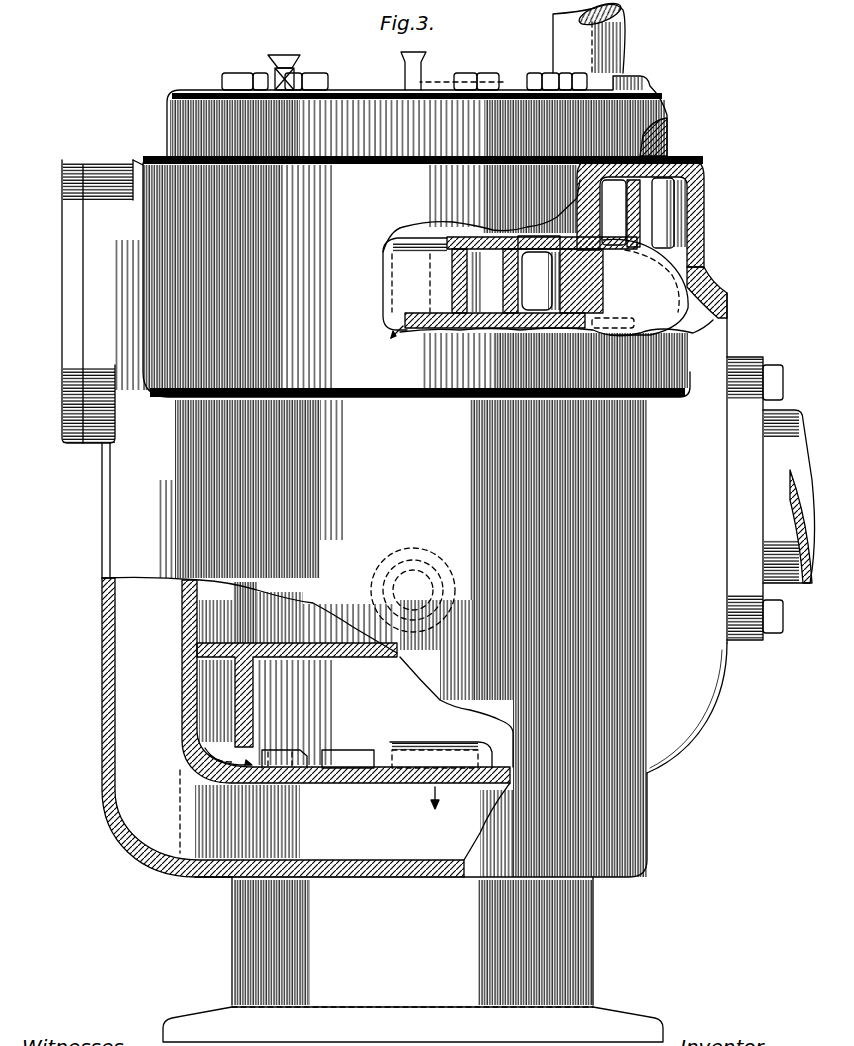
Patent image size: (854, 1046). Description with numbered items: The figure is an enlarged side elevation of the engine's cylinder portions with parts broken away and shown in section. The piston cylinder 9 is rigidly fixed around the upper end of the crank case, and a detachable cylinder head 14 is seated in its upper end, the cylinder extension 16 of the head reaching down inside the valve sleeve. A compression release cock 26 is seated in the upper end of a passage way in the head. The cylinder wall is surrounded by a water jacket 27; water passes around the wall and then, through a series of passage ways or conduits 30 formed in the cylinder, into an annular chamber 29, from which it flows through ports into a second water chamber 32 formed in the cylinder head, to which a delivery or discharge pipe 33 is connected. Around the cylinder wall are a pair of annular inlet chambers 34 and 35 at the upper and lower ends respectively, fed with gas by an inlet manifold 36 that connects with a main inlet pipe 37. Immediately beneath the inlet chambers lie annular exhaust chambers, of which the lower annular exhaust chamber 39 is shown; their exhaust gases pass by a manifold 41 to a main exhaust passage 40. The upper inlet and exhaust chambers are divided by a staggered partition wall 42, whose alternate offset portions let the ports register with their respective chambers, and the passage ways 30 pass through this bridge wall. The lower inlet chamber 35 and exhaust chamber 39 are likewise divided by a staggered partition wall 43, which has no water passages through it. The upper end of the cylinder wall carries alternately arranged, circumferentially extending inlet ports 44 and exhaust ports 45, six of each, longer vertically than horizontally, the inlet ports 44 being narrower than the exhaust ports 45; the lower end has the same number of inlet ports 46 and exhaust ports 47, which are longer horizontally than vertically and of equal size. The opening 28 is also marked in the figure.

The piston cylinder 9 is at (600, 1008).
The cylinder head 14 is at (661, 106).
The cylinder extension 16 is at (540, 84).
The compression release cock 26 is at (300, 63).
The water jacket 27 is at (183, 612).
The opening 28 is at (418, 572).
The annular chamber 29 is at (634, 193).
The passage ways or conduits 30 is at (481, 316).
The second water chamber 32 is at (667, 136).
The delivery or discharge pipe 33 is at (622, 47).
The upper annular inlet chamber 34 is at (692, 203).
The lower annular inlet chamber 35 is at (316, 724).
The inlet manifold 36 is at (687, 687).
The main inlet pipe 37 is at (780, 575).
The lower annular exhaust chamber 39 is at (198, 872).
The main exhaust passage 40 is at (70, 340).
The exhaust manifold 41 is at (125, 650).
The staggered partition wall 42 is at (497, 230).
The lower staggered partition wall 43 is at (350, 783).
The upper inlet ports 44 is at (554, 243).
The upper exhaust ports 45 is at (420, 315).
The lower inlet ports 46 is at (368, 756).
The lower exhaust ports 47 is at (437, 755).